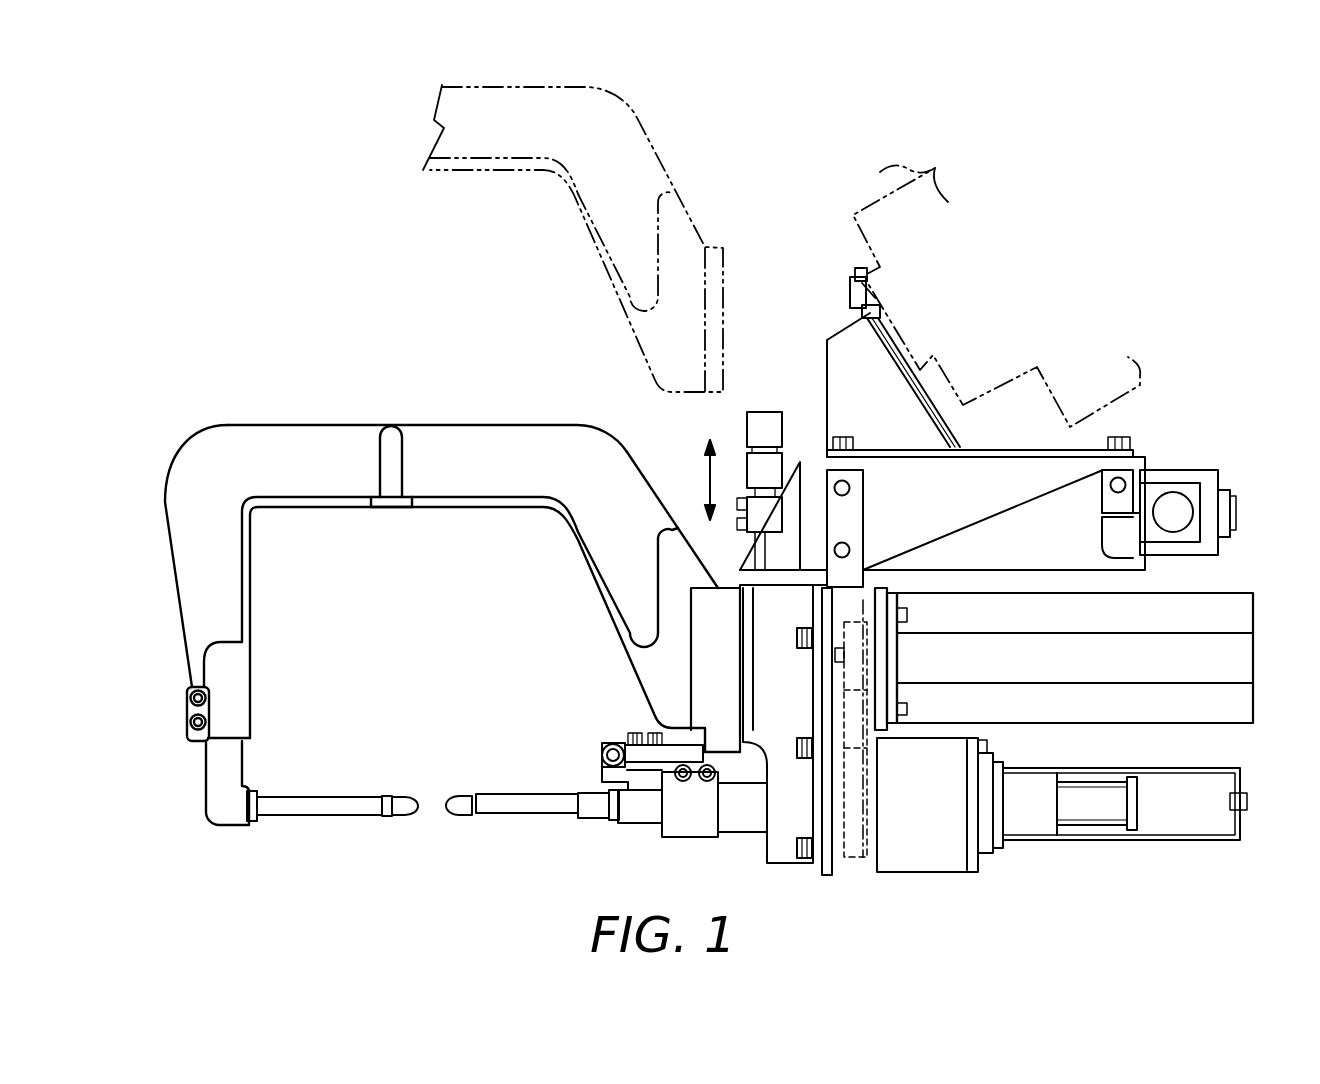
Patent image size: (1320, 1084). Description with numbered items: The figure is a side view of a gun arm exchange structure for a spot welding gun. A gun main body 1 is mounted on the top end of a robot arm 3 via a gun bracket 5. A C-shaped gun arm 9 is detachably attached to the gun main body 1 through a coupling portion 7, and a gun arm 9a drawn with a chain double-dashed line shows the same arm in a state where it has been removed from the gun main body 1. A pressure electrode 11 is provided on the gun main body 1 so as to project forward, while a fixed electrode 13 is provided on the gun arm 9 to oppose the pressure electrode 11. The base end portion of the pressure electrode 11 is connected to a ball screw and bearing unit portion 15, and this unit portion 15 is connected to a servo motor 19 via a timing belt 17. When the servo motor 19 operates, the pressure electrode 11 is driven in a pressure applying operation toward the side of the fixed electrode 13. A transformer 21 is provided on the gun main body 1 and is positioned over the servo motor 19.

The gun main body 1 is at (767, 847).
The robot arm 3 is at (880, 172).
The gun bracket 5 is at (825, 350).
The coupling portion 7 is at (715, 577).
The gun arm 9 is at (443, 425).
The gun arm 9a is at (513, 170).
The pressure electrode 11 is at (530, 796).
The fixed electrode 13 is at (363, 796).
The ball screw and bearing unit portion 15 is at (988, 745).
The timing belt 17 is at (870, 782).
The servo motor 19 is at (1187, 593).
The transformer 21 is at (1193, 463).